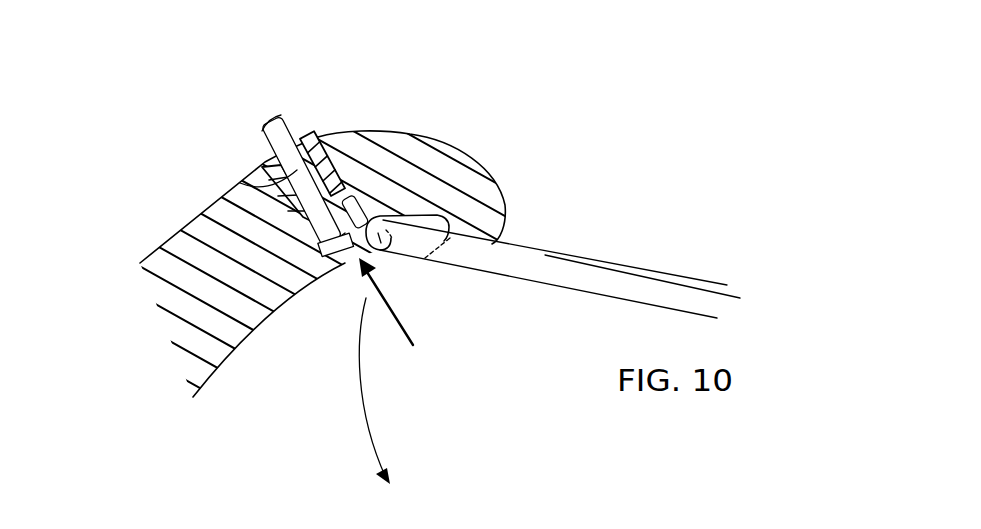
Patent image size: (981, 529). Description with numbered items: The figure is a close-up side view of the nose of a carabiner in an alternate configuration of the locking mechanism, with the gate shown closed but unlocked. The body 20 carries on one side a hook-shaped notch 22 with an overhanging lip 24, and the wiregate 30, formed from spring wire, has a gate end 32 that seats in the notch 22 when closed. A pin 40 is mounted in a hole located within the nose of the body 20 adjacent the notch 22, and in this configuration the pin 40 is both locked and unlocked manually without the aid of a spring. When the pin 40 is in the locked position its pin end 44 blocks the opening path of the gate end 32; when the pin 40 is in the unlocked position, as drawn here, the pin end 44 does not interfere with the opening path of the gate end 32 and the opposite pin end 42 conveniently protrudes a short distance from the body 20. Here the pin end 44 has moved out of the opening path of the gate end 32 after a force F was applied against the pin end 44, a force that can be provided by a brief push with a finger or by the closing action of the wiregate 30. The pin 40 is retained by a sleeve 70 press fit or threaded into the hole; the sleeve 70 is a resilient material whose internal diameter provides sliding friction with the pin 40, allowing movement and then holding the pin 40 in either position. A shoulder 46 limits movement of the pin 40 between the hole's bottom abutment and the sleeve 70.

The body 20 is at (118, 364).
The hook-shaped notch 22 is at (417, 216).
The overhanging lip 24 is at (425, 258).
The wiregate 30 is at (607, 277).
The gate end 32 is at (376, 244).
The pin 40 is at (292, 227).
The pin end 42 is at (273, 130).
The pin end 44 is at (330, 257).
The shoulder 46 is at (290, 228).
The sleeve 70 is at (338, 160).